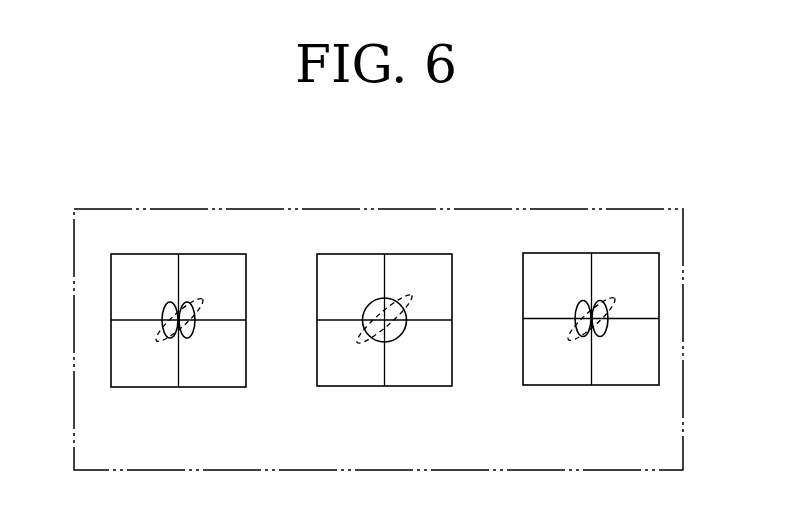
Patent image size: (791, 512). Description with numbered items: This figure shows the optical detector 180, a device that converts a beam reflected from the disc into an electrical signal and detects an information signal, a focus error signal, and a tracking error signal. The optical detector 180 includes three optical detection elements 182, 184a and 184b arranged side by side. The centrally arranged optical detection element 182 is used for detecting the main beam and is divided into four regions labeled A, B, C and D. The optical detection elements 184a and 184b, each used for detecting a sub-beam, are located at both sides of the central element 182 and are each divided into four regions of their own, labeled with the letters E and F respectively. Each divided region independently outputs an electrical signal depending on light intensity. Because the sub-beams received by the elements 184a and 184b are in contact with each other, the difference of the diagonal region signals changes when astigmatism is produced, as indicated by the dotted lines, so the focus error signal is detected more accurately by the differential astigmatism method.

The optical detector 180 is at (372, 177).
The optical detection element for detecting a sub-beam 184a is at (157, 387).
The optical detection element for detecting a main beam 182 is at (362, 386).
The optical detection element for detecting a sub-beam 184b is at (568, 385).